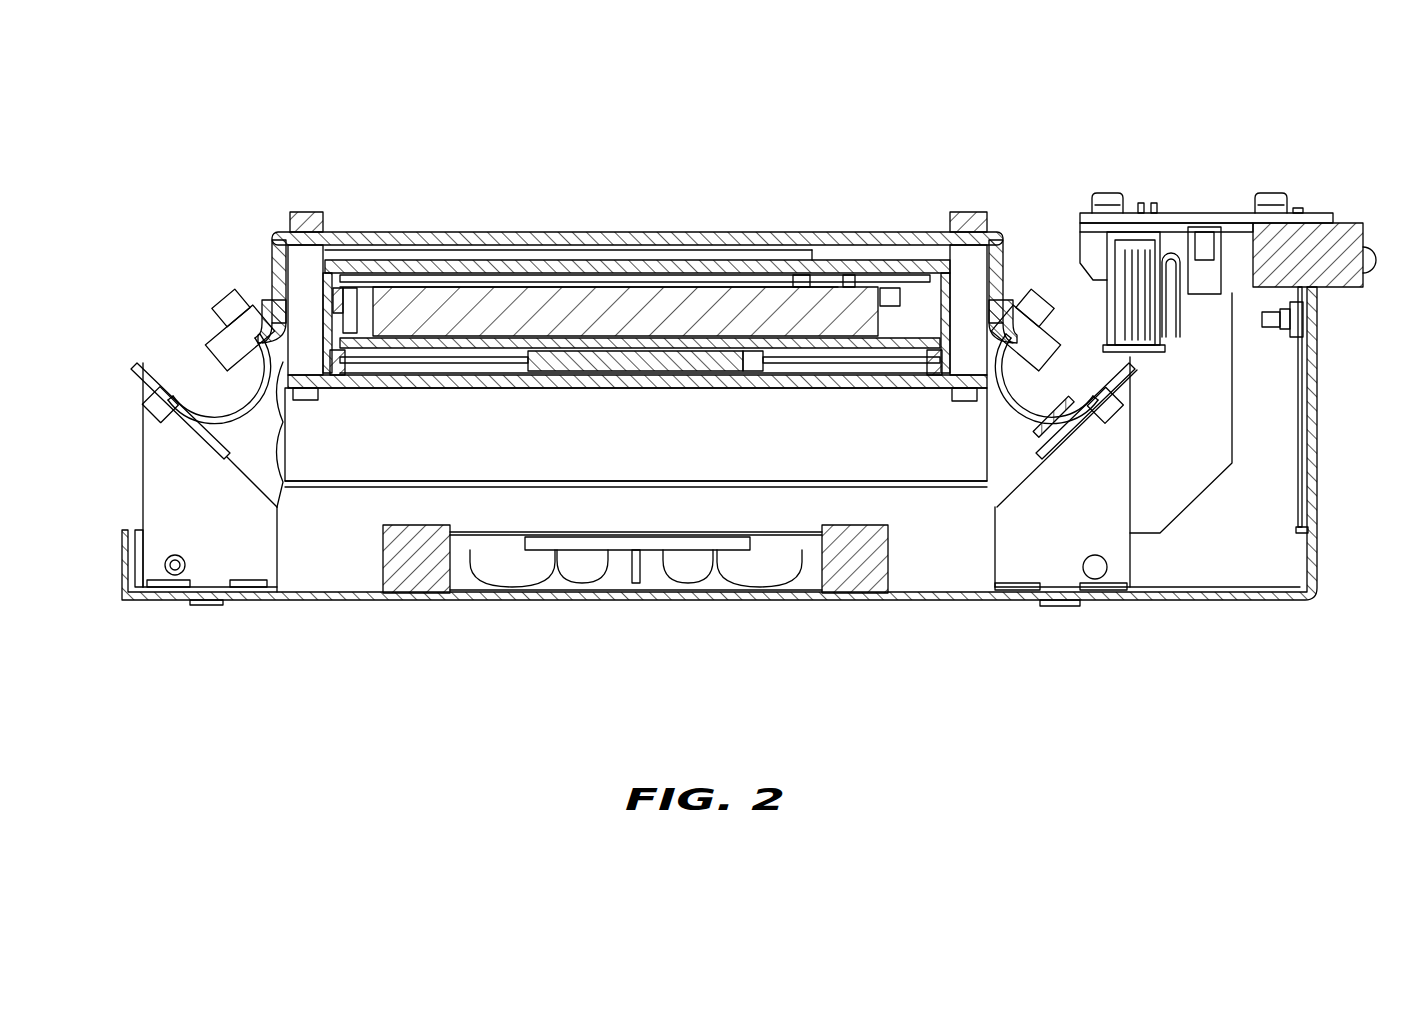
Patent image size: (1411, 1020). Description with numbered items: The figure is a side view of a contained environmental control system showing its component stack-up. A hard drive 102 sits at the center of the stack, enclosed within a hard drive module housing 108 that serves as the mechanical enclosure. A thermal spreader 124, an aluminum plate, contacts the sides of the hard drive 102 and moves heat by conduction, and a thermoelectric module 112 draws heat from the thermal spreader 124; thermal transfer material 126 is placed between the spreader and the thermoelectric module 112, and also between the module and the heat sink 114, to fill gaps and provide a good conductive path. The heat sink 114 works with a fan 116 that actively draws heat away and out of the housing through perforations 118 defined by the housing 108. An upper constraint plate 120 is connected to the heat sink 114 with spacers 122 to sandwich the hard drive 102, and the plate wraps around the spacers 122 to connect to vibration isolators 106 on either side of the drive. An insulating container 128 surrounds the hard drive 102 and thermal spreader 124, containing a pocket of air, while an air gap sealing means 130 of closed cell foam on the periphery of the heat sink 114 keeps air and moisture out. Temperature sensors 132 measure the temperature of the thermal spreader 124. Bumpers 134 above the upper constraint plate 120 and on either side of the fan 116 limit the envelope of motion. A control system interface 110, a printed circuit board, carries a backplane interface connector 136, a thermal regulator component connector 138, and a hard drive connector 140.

The hard drive 102 is at (593, 307).
The vibration isolator 106 is at (172, 313).
The hard drive module housing 108 is at (1258, 600).
The control system interface 110 is at (1168, 213).
The thermoelectric module 112 is at (542, 352).
The heat sink 114 is at (283, 430).
The fan 116 is at (685, 577).
The perforations 118 is at (518, 597).
The upper constraint plate 120 is at (803, 240).
The spacers 122 is at (273, 233).
The thermal spreader 124 is at (455, 345).
The thermal transfer material 126 is at (617, 372).
The insulating container 128 is at (707, 263).
The air gap sealing means 130 is at (343, 372).
The temperature sensors 132 is at (330, 302).
The bumpers 134 is at (300, 213).
The backplane interface connector 136 is at (1322, 238).
The thermal regulator component connector 138 is at (1135, 327).
The hard drive connector 140 is at (1205, 285).